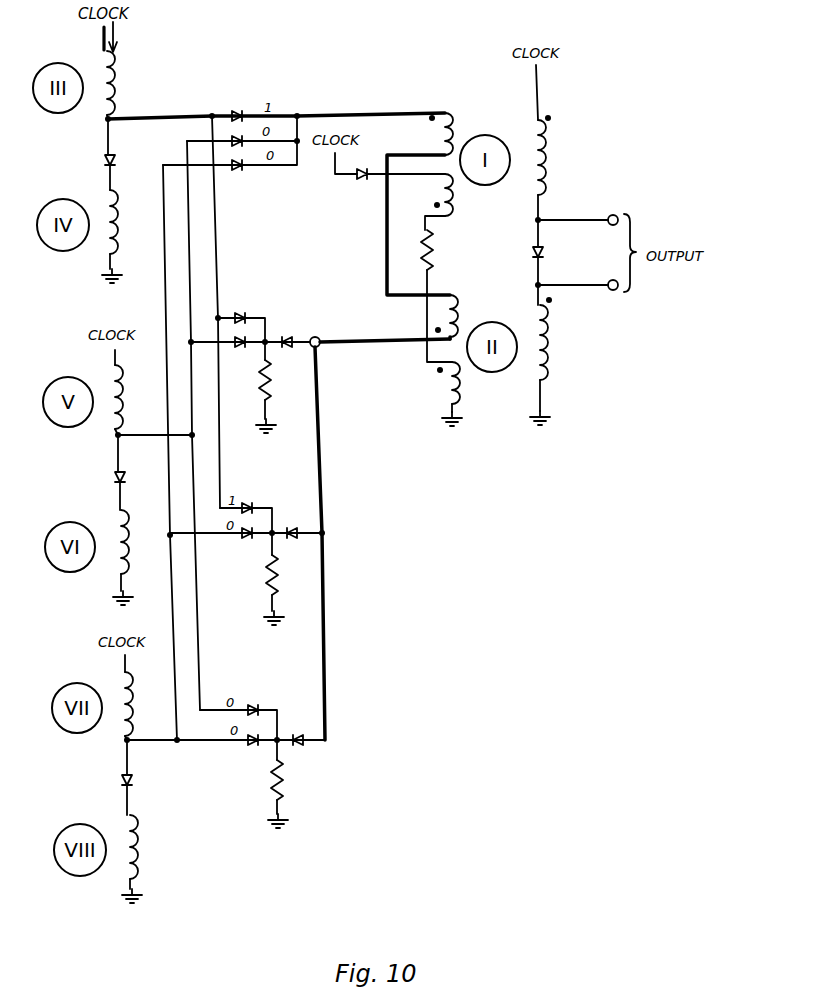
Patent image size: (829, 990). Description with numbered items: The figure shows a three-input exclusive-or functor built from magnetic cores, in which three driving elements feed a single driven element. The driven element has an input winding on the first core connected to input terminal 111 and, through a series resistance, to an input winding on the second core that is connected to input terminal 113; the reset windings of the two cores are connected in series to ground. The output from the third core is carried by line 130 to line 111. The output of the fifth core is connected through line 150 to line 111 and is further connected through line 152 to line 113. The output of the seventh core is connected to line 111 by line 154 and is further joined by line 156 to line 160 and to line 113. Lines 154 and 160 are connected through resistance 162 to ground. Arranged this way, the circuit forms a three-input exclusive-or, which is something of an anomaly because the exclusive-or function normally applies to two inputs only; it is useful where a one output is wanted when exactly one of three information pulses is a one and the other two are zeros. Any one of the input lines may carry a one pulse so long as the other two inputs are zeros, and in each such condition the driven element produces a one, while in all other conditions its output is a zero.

The line 130 is at (190, 117).
The input terminal 111 is at (392, 113).
The input terminal 113 is at (372, 343).
The line 152 is at (268, 336).
The line 160 is at (324, 496).
The line 156 is at (208, 538).
The line 150 is at (212, 607).
The line 154 is at (177, 686).
The resistance 162 is at (284, 783).